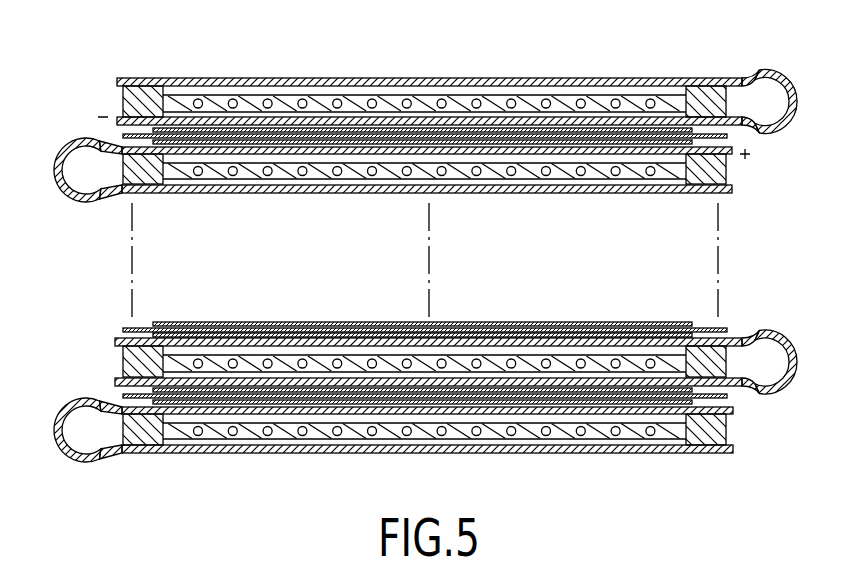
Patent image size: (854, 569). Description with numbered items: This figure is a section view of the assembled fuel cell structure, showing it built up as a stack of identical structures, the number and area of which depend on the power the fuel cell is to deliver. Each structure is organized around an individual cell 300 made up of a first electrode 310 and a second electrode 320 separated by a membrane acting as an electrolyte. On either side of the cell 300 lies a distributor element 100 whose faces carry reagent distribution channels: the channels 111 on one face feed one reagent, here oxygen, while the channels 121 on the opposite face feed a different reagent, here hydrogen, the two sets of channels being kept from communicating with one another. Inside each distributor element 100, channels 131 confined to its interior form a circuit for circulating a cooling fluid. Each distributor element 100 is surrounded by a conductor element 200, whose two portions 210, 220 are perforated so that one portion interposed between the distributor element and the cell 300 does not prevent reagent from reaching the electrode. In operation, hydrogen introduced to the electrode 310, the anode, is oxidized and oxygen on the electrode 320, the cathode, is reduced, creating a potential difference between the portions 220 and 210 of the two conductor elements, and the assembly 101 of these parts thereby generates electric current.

The distributor element 100 is at (736, 107).
The frame body 101 is at (127, 100).
The distribution channels 111 is at (248, 98).
The channels 121 is at (314, 118).
The channels 131 is at (474, 98).
The conductor element 200 is at (787, 65).
The portion of the conductor element 210 is at (145, 80).
The portion of the conductor element 220 is at (120, 133).
The individual cell 300 is at (733, 138).
The first electrode 310 is at (662, 122).
The second electrode 320 is at (728, 156).